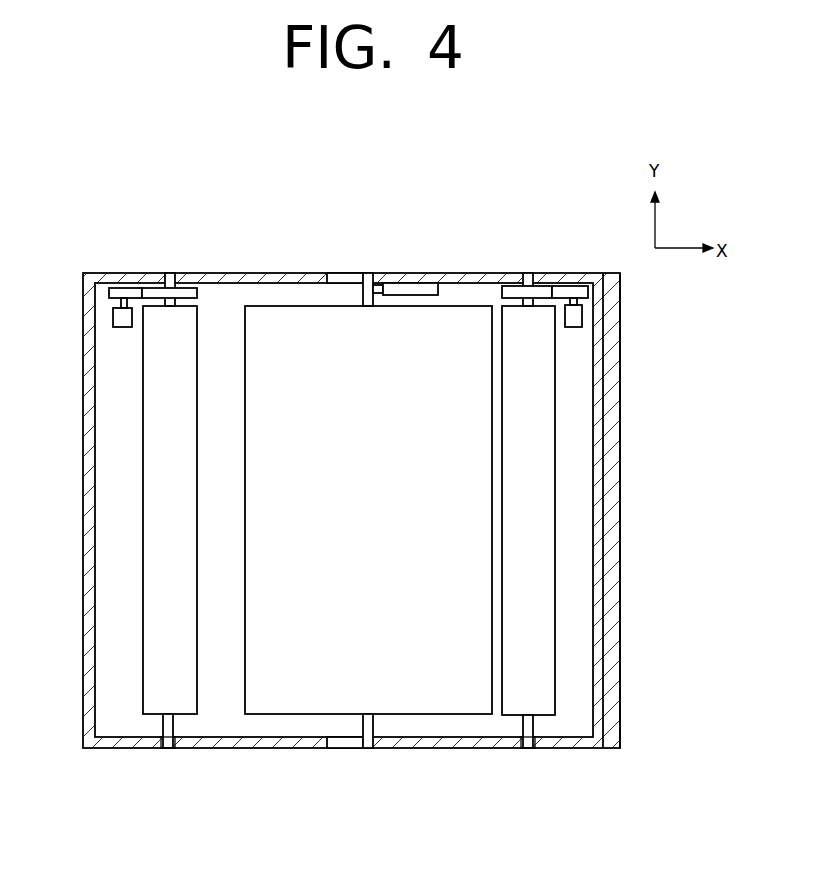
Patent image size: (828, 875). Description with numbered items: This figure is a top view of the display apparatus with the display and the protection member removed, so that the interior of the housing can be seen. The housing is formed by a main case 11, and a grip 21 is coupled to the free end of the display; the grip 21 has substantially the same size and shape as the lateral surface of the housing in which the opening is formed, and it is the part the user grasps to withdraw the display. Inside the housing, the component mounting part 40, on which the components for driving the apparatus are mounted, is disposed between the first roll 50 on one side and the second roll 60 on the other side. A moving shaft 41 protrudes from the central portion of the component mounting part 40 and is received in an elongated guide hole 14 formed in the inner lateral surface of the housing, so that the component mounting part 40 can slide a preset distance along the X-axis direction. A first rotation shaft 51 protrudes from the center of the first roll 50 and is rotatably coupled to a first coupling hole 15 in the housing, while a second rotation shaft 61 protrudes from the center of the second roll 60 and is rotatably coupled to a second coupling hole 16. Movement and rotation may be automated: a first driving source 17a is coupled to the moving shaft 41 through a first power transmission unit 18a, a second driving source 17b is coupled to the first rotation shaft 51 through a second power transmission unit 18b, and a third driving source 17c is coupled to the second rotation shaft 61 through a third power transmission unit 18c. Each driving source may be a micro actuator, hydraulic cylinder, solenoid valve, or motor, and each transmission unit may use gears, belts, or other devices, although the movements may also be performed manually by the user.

The main case 11 is at (217, 279).
The guide hole 14 is at (354, 744).
The first coupling hole 15 is at (165, 742).
The second coupling hole 16 is at (522, 742).
The first driving source 17a is at (420, 287).
The second driving source 17b is at (121, 314).
The third driving source 17c is at (583, 315).
The first power transmission unit 18a is at (379, 285).
The second power transmission unit 18b is at (158, 288).
The third power transmission unit 18c is at (578, 287).
The grip 21 is at (621, 376).
The component mounting part 40 is at (287, 705).
The moving shaft 41 is at (370, 750).
The first roll 50 is at (155, 512).
The first rotation shaft 51 is at (168, 749).
The second roll 60 is at (548, 686).
The second rotation shaft 61 is at (528, 749).